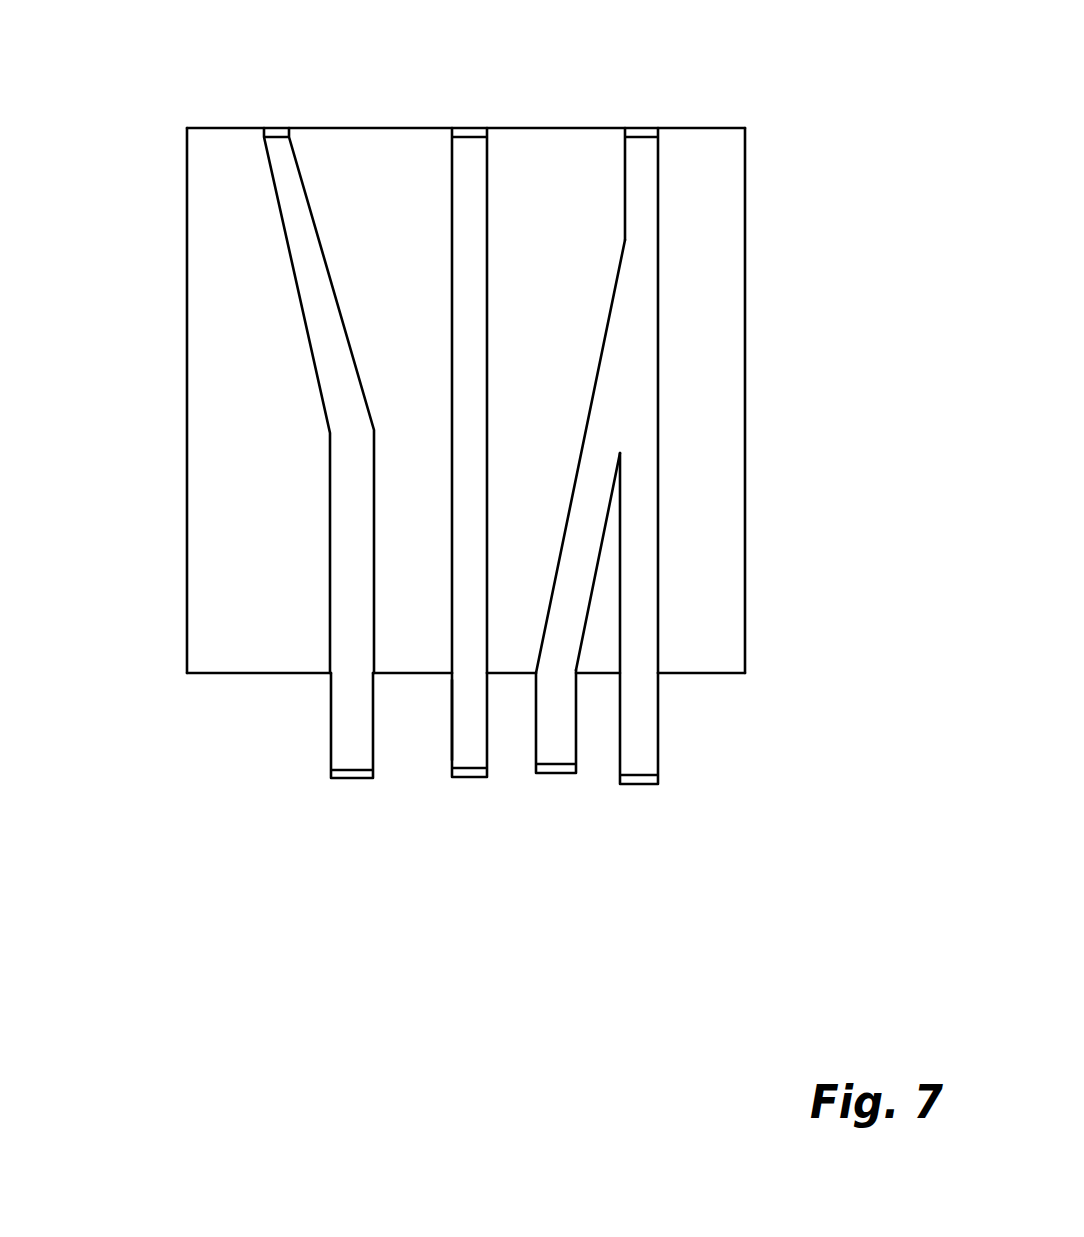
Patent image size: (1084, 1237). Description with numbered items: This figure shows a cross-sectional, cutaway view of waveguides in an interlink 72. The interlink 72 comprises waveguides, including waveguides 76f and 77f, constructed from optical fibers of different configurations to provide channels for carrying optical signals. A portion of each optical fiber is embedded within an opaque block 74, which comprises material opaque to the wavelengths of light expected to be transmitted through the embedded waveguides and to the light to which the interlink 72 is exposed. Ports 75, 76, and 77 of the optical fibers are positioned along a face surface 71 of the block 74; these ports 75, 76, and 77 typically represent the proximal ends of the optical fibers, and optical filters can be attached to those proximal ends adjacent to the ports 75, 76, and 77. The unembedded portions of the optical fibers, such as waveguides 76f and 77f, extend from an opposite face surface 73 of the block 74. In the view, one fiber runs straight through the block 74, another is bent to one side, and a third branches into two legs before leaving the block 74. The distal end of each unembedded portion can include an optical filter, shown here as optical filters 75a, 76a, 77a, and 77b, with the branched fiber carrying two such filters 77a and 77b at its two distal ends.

The face surface 71 is at (481, 415).
The interlink 72 is at (745, 392).
The face surface 73 is at (712, 677).
The opaque block 74 is at (232, 512).
The port 75 is at (278, 433).
The optical filter 75a is at (345, 781).
The port 76 is at (450, 482).
The optical filter 76a is at (472, 781).
The waveguide 76f is at (462, 725).
The port 77 is at (668, 483).
The optical filter 77a is at (637, 786).
The optical filter 77b is at (560, 776).
The waveguide 77f is at (632, 335).